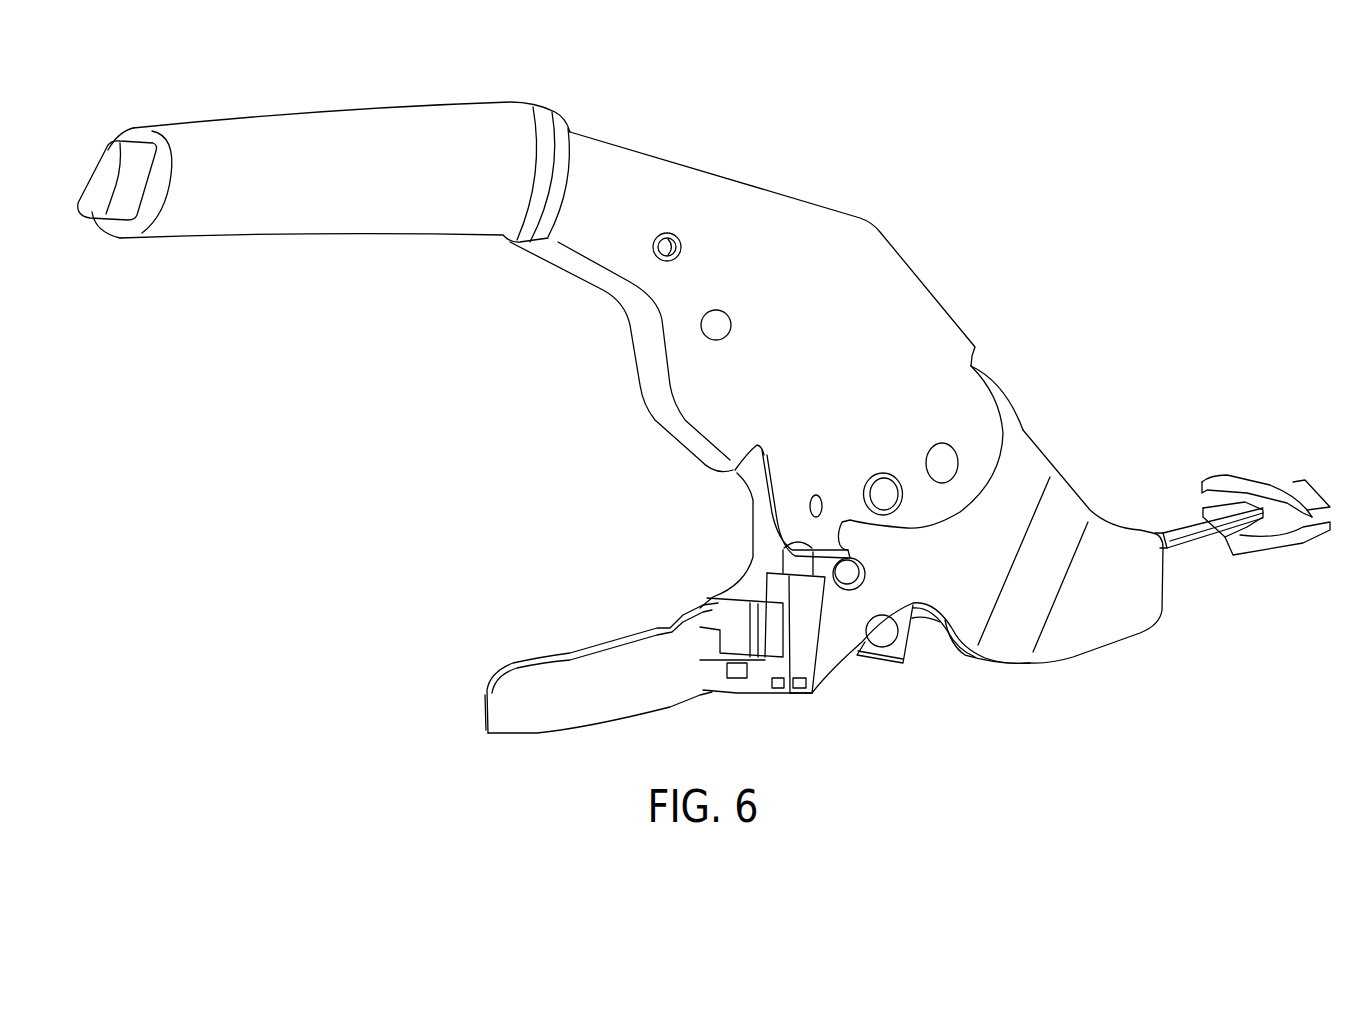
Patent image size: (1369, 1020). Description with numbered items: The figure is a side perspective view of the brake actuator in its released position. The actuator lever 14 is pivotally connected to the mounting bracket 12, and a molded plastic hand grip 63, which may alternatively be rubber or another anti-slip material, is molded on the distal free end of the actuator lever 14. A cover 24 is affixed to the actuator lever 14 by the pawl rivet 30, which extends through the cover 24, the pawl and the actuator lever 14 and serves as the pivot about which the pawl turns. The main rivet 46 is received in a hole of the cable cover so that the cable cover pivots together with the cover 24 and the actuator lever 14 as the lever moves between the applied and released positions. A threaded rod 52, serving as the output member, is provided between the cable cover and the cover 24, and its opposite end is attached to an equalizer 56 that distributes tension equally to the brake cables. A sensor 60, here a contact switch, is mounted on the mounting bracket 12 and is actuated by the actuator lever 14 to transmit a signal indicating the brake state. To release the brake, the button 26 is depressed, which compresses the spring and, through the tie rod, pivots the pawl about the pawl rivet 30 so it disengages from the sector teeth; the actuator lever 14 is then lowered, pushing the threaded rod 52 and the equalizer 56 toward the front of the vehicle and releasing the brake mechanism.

The mounting bracket 12 is at (1063, 523).
The actuator lever 14 is at (903, 295).
The cover 24 is at (1002, 390).
The button 26 is at (103, 177).
The pawl rivet 30 is at (712, 330).
The main rivet 46 is at (947, 467).
The threaded rod 52 is at (1200, 532).
The equalizer 56 is at (1245, 482).
The sensor 60 is at (723, 615).
The hand grip 63 is at (520, 133).